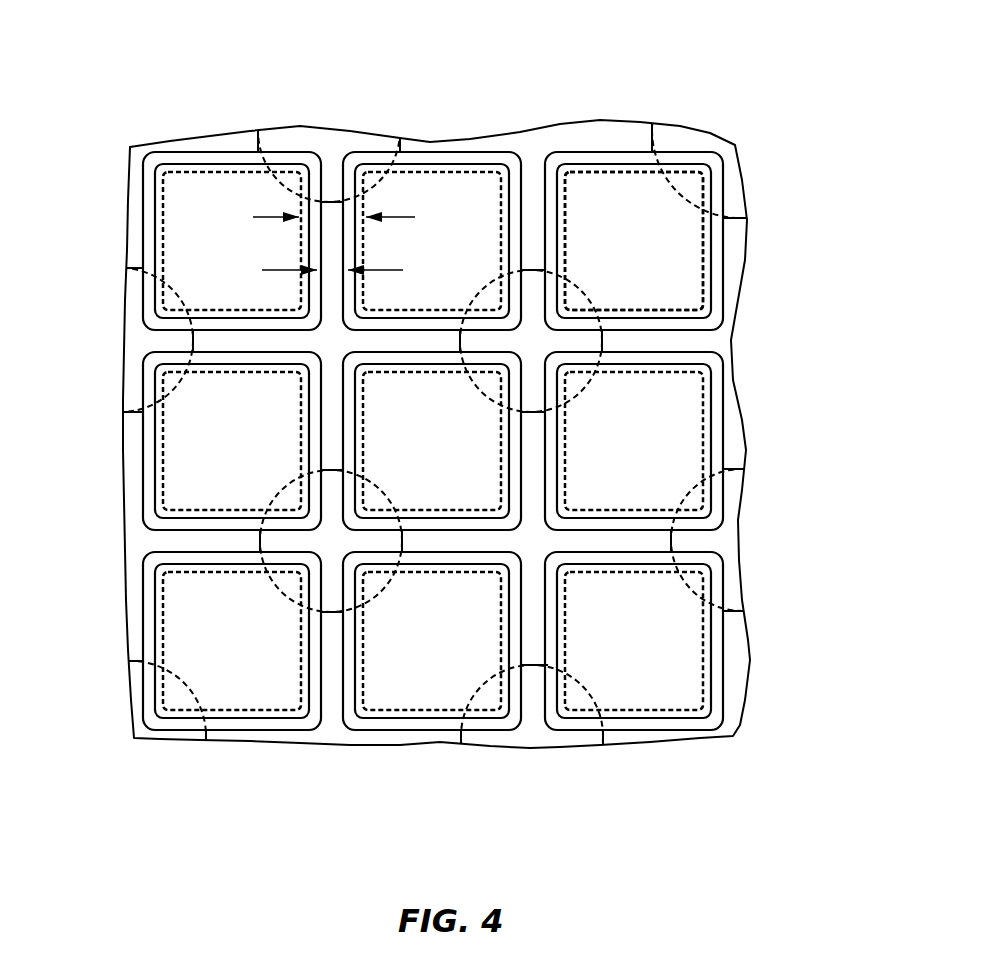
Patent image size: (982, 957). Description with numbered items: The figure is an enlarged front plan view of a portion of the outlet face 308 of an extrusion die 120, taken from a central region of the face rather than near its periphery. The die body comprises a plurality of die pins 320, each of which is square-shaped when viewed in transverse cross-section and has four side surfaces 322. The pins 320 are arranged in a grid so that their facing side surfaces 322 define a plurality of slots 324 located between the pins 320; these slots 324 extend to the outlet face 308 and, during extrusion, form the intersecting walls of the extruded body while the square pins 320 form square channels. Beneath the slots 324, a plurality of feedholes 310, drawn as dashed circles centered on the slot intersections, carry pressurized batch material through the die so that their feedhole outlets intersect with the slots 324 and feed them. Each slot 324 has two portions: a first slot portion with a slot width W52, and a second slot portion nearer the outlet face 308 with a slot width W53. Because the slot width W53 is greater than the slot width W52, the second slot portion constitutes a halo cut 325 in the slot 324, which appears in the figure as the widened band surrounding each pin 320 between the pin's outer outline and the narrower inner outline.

The extrusion die 120 is at (228, 92).
The outlet face 308 is at (606, 190).
The feedholes 310 is at (373, 188).
The die pins 320 is at (460, 205).
The side surfaces 322 is at (142, 488).
The slots 324 is at (538, 166).
The halo cut 325 is at (148, 422).
The slot width W52 is at (280, 270).
The slot width W53 is at (270, 217).